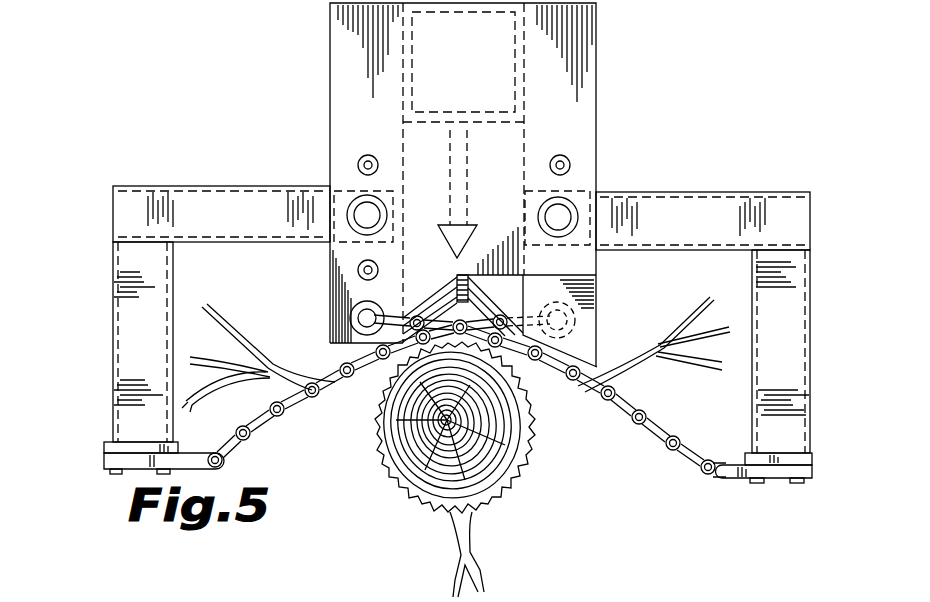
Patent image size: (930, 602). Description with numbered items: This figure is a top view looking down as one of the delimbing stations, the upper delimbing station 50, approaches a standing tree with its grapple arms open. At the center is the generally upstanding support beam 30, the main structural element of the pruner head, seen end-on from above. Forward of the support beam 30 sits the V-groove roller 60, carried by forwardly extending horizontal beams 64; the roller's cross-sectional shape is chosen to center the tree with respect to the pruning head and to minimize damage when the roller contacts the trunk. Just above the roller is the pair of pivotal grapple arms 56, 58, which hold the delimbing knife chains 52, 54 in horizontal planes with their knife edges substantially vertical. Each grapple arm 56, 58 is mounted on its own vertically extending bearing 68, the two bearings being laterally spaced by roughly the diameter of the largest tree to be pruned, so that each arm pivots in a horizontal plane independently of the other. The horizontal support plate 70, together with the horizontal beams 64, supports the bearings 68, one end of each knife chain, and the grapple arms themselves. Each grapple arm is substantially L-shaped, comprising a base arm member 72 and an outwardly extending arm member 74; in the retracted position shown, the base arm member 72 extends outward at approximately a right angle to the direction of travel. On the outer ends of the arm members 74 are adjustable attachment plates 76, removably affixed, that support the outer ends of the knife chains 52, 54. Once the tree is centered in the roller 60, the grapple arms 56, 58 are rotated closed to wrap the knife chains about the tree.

The support beam 30 is at (515, 90).
The upper delimbing station 50 is at (742, 521).
The delimbing knife chain 52 is at (298, 406).
The delimbing knife chain 54 is at (645, 426).
The pivotal grapple arm 56 is at (113, 206).
The pivotal grapple arm 58 is at (810, 220).
The V-groove roller 60 is at (360, 416).
The horizontal beam 64 is at (322, 362).
The vertical bearing 68 is at (350, 208).
The horizontal support plate 70 is at (443, 185).
The base arm member 72 is at (250, 226).
The outwardly extending arm member 74 is at (162, 340).
The attachment plate 76 is at (130, 470).